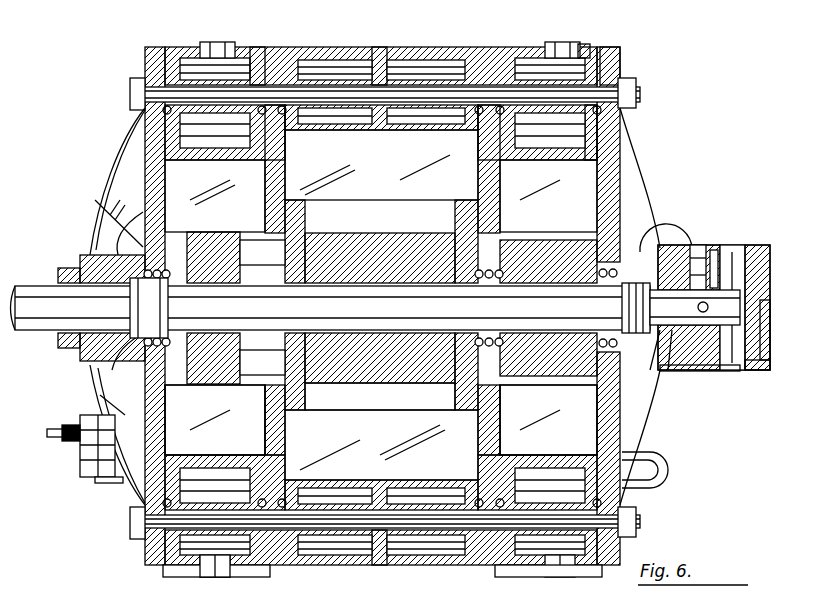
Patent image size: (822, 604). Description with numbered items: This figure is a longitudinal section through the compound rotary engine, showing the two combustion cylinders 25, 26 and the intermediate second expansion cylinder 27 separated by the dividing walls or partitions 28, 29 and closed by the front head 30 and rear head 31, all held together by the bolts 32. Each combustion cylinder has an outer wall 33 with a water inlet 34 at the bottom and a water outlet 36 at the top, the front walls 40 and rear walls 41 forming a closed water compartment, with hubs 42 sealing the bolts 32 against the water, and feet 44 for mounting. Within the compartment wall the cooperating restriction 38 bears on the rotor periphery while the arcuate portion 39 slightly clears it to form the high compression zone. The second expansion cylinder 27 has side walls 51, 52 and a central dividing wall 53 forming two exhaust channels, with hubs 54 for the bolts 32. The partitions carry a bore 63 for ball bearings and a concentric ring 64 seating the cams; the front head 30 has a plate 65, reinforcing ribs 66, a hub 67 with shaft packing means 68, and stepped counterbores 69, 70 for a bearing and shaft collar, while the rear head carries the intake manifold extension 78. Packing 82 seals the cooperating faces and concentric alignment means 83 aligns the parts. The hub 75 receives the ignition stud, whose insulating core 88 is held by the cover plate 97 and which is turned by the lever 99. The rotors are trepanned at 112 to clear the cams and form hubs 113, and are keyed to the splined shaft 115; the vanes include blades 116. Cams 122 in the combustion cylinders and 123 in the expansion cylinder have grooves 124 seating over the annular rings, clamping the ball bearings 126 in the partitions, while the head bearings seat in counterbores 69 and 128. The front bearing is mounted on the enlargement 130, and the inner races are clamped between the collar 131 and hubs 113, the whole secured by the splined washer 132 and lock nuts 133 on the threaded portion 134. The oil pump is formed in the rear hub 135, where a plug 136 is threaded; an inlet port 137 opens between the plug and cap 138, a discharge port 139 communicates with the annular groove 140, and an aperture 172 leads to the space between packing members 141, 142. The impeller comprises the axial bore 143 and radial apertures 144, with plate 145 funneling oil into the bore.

The combustion cylinder 25 is at (180, 130).
The combustion cylinder 26 is at (618, 70).
The second expansion cylinder 27 is at (398, 52).
The dividing wall or partition 28 is at (272, 47).
The dividing wall or partition 29 is at (489, 47).
The front head 30 is at (148, 47).
The rear head 31 is at (612, 48).
The bolts 32 is at (637, 92).
The outer wall 33 is at (182, 57).
The water inlet 34 is at (228, 576).
The water outlet 36 is at (218, 42).
The cooperating restriction 38 is at (381, 307).
The arcuate portion (clearing restriction) 39 is at (381, 309).
The front walls 40 is at (168, 68).
The rear walls 41 is at (258, 55).
The hubs 42 is at (583, 45).
The feet or bases 44 is at (590, 577).
The side wall 51 is at (462, 58).
The side wall 52 is at (300, 58).
The dividing wall 53 is at (378, 50).
The hubs 54 is at (338, 540).
The bore (annular ring) 63 is at (210, 232).
The concentric ring 64 is at (255, 240).
The plate 65 is at (147, 160).
The reinforcing ribs 66 is at (103, 188).
The hub 67 is at (88, 356).
The bearing flange 68 is at (60, 345).
The stepped counterbore 69 is at (132, 230).
The stepped counterbore 70 is at (128, 252).
The hub 75 is at (128, 482).
The intake manifold extension 78 is at (652, 470).
The packing 82 is at (602, 110).
The concentric alignment means 83 is at (165, 540).
The insulating core 88 is at (62, 432).
The cover plate 97 is at (96, 478).
The lever 99 is at (80, 456).
The trepanned portion 112 is at (315, 383).
The hub 113 is at (372, 233).
The splined shaft 115 is at (410, 383).
The blade 116 is at (381, 165).
The cam 122 is at (225, 384).
The cam 123 is at (300, 408).
The groove 124 is at (140, 370).
The ball bearings 126 is at (456, 232).
The counterbore 128 is at (650, 230).
The enlargement 130 is at (95, 368).
The collar 131 is at (130, 302).
The splined washer 132 is at (664, 235).
The lock nuts 133 is at (640, 262).
The threaded portion 134 is at (660, 368).
The rear hub 135 is at (655, 378).
The plug 136 is at (672, 376).
The inlet port 137 is at (736, 245).
The cap 138 is at (756, 246).
The discharge port 139 is at (713, 250).
The annular groove 140 is at (702, 372).
The packing member 141 is at (698, 245).
The packing member 142 is at (722, 372).
The axial bore 143 is at (752, 372).
The radial apertures 144 is at (698, 308).
The plate 145 is at (765, 372).
The aperture 172 is at (714, 270).